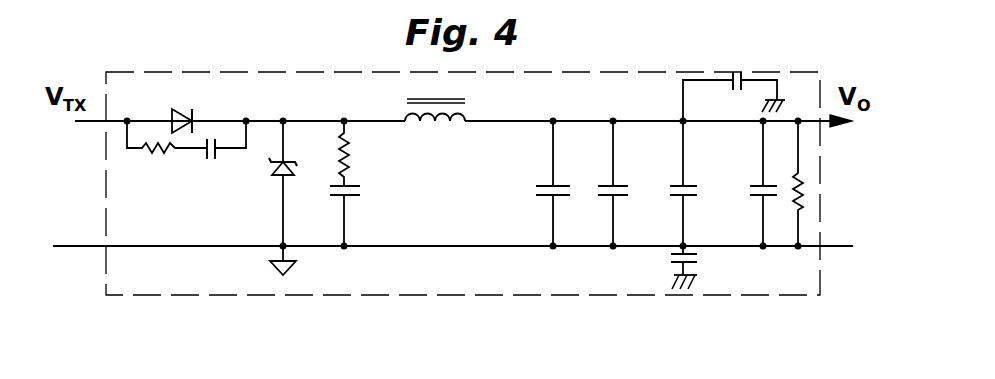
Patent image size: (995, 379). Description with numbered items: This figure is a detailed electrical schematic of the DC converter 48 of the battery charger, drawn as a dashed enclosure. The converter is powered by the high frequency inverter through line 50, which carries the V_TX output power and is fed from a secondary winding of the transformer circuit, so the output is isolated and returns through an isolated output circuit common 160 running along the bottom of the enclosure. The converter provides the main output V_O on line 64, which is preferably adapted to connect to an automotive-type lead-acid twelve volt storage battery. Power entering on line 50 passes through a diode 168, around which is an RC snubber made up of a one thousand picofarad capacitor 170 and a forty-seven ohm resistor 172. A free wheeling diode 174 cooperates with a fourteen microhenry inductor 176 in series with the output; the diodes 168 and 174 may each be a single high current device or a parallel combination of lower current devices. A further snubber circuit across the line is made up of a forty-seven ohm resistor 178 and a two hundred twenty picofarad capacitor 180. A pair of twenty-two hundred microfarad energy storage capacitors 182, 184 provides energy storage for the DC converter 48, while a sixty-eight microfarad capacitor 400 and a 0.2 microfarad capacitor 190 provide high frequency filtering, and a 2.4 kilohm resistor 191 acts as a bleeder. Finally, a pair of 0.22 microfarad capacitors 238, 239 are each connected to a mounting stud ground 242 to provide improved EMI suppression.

The DC converter 48 is at (185, 297).
The line 50 is at (101, 122).
The main output V_O 64 is at (830, 124).
The isolated output circuit common 160 is at (104, 248).
The diode 168 is at (184, 109).
The capacitor 170 is at (228, 152).
The resistor 172 is at (176, 150).
The free wheeling diode 174 is at (323, 146).
The inductor 176 is at (443, 124).
The resistor 178 is at (348, 149).
The capacitor 180 is at (350, 188).
The energy storage capacitor 182 is at (545, 197).
The energy storage capacitor 184 is at (688, 198).
The capacitor 190 is at (762, 186).
The resistor 191 is at (797, 176).
The capacitor 238 is at (698, 262).
The capacitor 239 is at (740, 91).
The mounting stud ground 242 is at (783, 97).
The capacitor 400 is at (620, 198).